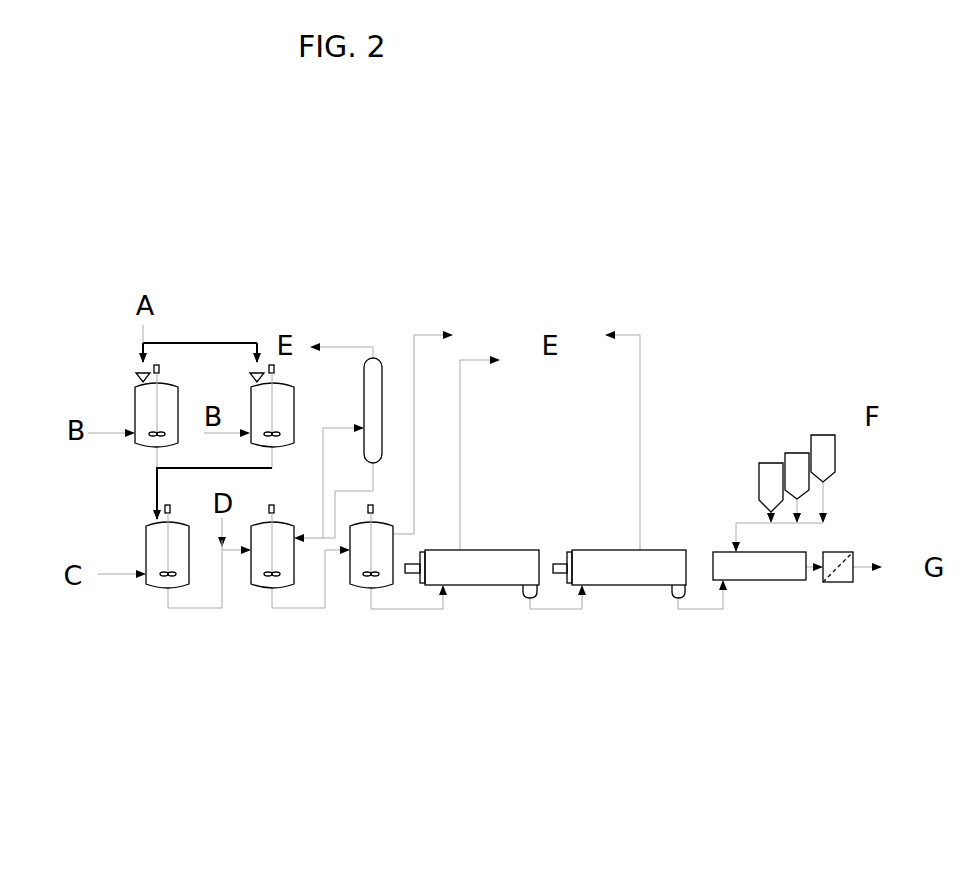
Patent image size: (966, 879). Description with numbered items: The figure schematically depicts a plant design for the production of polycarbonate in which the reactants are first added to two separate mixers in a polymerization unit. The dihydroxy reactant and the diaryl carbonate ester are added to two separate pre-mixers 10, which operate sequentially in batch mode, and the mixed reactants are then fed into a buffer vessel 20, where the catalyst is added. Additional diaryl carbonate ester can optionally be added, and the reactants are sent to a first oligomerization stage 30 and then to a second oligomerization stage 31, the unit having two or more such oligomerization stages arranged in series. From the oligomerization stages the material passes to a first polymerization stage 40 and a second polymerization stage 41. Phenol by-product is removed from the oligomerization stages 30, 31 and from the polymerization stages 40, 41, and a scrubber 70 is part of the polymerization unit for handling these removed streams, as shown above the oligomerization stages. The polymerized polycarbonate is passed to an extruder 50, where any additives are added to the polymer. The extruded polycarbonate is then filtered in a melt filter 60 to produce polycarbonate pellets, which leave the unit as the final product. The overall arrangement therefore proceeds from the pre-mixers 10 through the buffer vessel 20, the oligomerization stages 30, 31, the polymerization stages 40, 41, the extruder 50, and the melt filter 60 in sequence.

The pre-mixer 10 is at (126, 444).
The buffer vessel 20 is at (149, 600).
The oligomerization stage 30 is at (251, 600).
The oligomerization stage 31 is at (351, 600).
The polymerization stage 40 is at (483, 590).
The polymerization stage 41 is at (627, 601).
The extruder 50 is at (760, 594).
The melt filter 60 is at (842, 594).
The scrubber 70 is at (394, 353).